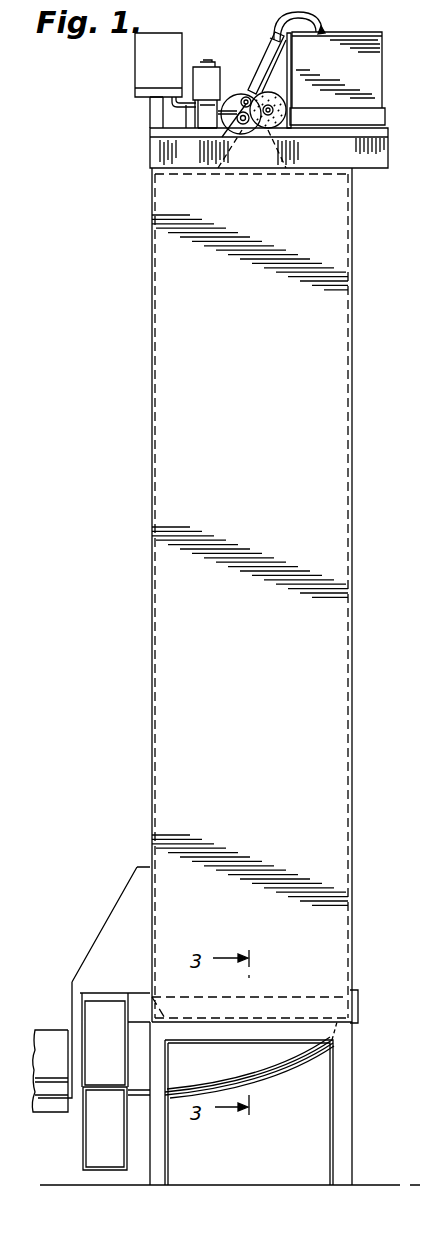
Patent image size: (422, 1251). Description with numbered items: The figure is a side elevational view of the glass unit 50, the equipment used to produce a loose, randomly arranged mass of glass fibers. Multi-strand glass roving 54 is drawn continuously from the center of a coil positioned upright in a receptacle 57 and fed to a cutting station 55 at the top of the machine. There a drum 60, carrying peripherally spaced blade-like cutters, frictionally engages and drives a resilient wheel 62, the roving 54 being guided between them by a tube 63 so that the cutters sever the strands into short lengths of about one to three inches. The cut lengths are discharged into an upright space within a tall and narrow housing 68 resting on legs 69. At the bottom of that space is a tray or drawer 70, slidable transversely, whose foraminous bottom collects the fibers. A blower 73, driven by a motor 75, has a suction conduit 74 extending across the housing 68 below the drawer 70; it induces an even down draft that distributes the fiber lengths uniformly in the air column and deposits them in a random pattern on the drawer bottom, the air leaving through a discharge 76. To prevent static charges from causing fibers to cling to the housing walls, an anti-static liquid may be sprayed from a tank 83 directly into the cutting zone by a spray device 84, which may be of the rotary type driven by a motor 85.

The glass unit 50 is at (150, 583).
The multi-strand glass roving 54 is at (323, 30).
The cutting station 55 is at (241, 90).
The receptacle 57 is at (351, 79).
The drum 60 is at (240, 136).
The resilient wheel 62 is at (282, 104).
The tube 63 is at (272, 46).
The housing 68 is at (151, 443).
The legs 69 is at (352, 1084).
The tray or drawer 70 is at (359, 1005).
The blower 73 is at (116, 1048).
The suction conduit 74 is at (278, 1070).
The motor 75 is at (52, 1040).
The discharge 76 is at (131, 1155).
The tank 83 is at (150, 72).
The spray device 84 is at (205, 121).
The motor 85 is at (208, 72).